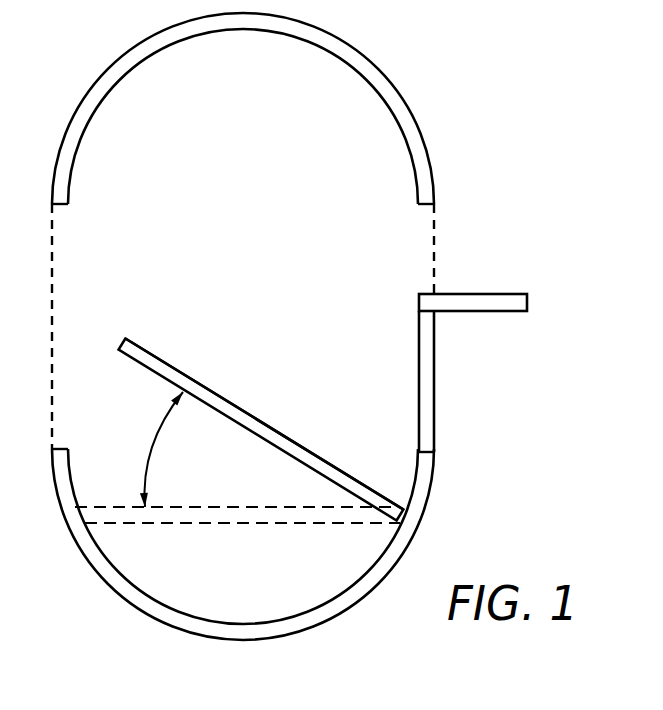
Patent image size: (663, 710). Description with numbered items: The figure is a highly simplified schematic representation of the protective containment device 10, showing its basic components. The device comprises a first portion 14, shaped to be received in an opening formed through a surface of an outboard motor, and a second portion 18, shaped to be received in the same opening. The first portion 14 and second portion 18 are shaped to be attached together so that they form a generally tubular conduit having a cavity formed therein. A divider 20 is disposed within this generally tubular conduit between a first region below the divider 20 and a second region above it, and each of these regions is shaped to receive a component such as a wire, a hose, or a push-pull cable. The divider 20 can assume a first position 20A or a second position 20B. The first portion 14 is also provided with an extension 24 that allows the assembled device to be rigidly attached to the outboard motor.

The protective containment device 10 is at (284, 226).
The first portion 14 is at (128, 601).
The second portion 18 is at (104, 73).
The divider 20 is at (233, 404).
The first position 20A is at (210, 526).
The second position 20B is at (316, 462).
The extension 24 is at (477, 293).